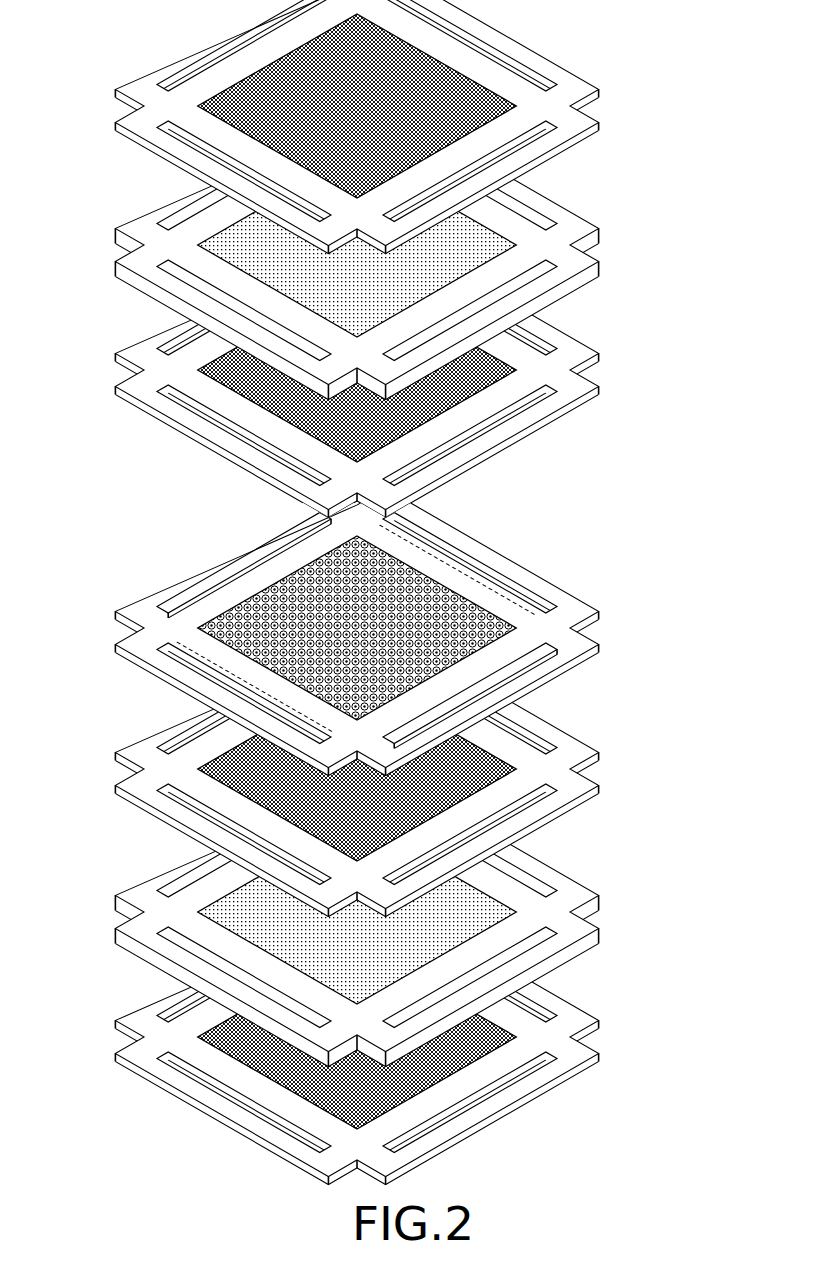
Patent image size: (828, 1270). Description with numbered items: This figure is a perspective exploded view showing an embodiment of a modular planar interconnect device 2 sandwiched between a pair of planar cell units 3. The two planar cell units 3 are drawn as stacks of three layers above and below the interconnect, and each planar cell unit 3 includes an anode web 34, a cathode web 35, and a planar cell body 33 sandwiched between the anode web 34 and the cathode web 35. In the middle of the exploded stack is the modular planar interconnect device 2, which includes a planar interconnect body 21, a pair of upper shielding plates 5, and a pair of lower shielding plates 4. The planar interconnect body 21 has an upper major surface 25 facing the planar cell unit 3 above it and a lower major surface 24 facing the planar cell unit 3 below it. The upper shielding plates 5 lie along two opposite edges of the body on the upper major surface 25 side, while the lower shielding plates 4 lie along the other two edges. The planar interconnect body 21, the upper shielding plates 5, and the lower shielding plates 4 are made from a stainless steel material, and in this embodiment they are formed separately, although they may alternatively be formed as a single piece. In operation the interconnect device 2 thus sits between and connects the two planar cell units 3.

The modular planar interconnect device 2 is at (358, 632).
The planar interconnect body 21 is at (345, 632).
The lower major surface 24 is at (357, 632).
The upper major surface 25 is at (357, 628).
The lower shielding plates 4 is at (357, 628).
The upper shielding plates 5 is at (357, 631).
The planar cell unit 3 is at (374, 600).
The planar cell body 33 is at (470, 905).
The anode web 34 is at (363, 466).
The cathode web 35 is at (472, 1048).